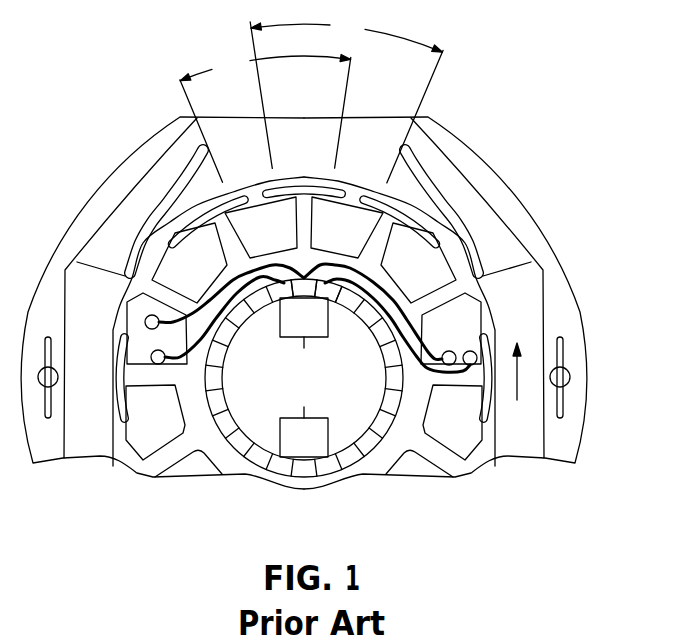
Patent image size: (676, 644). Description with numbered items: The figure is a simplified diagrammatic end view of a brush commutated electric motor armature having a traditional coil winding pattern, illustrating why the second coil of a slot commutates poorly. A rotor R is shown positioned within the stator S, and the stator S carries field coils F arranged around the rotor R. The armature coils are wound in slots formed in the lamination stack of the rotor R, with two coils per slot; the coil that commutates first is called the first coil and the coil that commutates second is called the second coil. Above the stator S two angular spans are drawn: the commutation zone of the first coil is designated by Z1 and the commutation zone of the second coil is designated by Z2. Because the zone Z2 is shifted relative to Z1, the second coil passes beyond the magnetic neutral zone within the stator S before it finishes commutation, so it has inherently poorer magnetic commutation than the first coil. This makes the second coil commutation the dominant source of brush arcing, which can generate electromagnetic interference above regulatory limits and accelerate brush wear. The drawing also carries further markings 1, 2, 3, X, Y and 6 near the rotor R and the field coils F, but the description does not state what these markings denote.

The stator S is at (107, 183).
The field coils F is at (123, 222).
The rotor R is at (404, 437).
The stator core 1 is at (304, 327).
The rotor position 2 is at (304, 289).
The rotor position 3 is at (331, 293).
The coil terminal X is at (297, 315).
The coil terminal Y is at (303, 318).
The rotation direction 6 is at (514, 359).
The commutation zone of the first coil Z1 is at (346, 99).
The commutation zone of the second coil Z2 is at (265, 119).